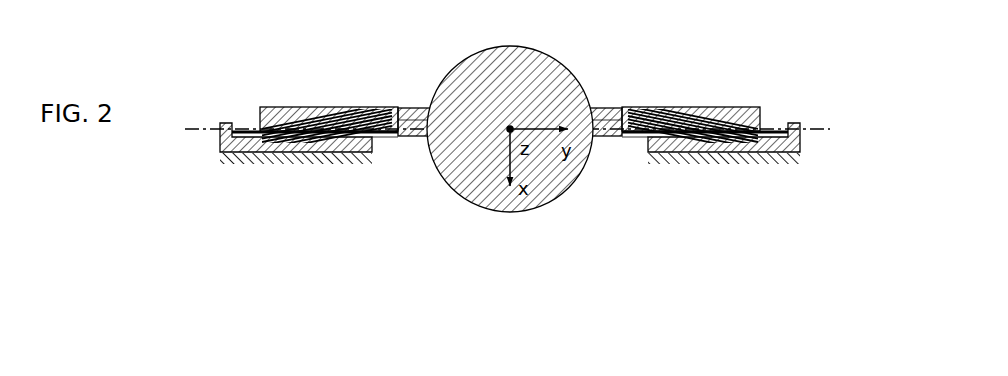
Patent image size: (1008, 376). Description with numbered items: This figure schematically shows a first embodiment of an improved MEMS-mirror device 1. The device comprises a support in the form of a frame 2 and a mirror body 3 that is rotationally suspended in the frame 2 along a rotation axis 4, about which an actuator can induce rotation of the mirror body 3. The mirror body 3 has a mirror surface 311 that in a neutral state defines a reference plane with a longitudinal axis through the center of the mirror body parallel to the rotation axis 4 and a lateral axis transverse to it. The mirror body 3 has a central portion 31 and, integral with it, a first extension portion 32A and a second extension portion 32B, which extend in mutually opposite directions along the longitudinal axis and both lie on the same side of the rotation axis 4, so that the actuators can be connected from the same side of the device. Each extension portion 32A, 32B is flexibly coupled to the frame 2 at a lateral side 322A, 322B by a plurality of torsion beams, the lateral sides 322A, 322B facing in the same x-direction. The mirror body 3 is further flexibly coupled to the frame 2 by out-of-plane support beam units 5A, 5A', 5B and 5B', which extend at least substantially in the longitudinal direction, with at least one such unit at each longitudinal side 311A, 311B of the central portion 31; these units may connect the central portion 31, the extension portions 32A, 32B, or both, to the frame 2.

The improved MEMS-mirror device 1 is at (206, 243).
The frame 2 is at (287, 156).
The mirror body 3 is at (544, 178).
The rotation axis 4 is at (820, 138).
The out-of-plane support beam unit 5A is at (289, 89).
The out-of-plane support beam unit 5B is at (730, 89).
The out-of-plane support beam unit 5A' is at (373, 190).
The out-of-plane support beam unit 5B' is at (648, 190).
The central portion 31 is at (542, 191).
The mirror surface 311 is at (510, 145).
The first shaft end 311A is at (397, 118).
The longitudinal side 311B is at (623, 118).
The first extension portion 32A is at (329, 87).
The second extension portion 32B is at (691, 87).
The lateral side 322A is at (332, 120).
The lateral side 322B is at (688, 120).